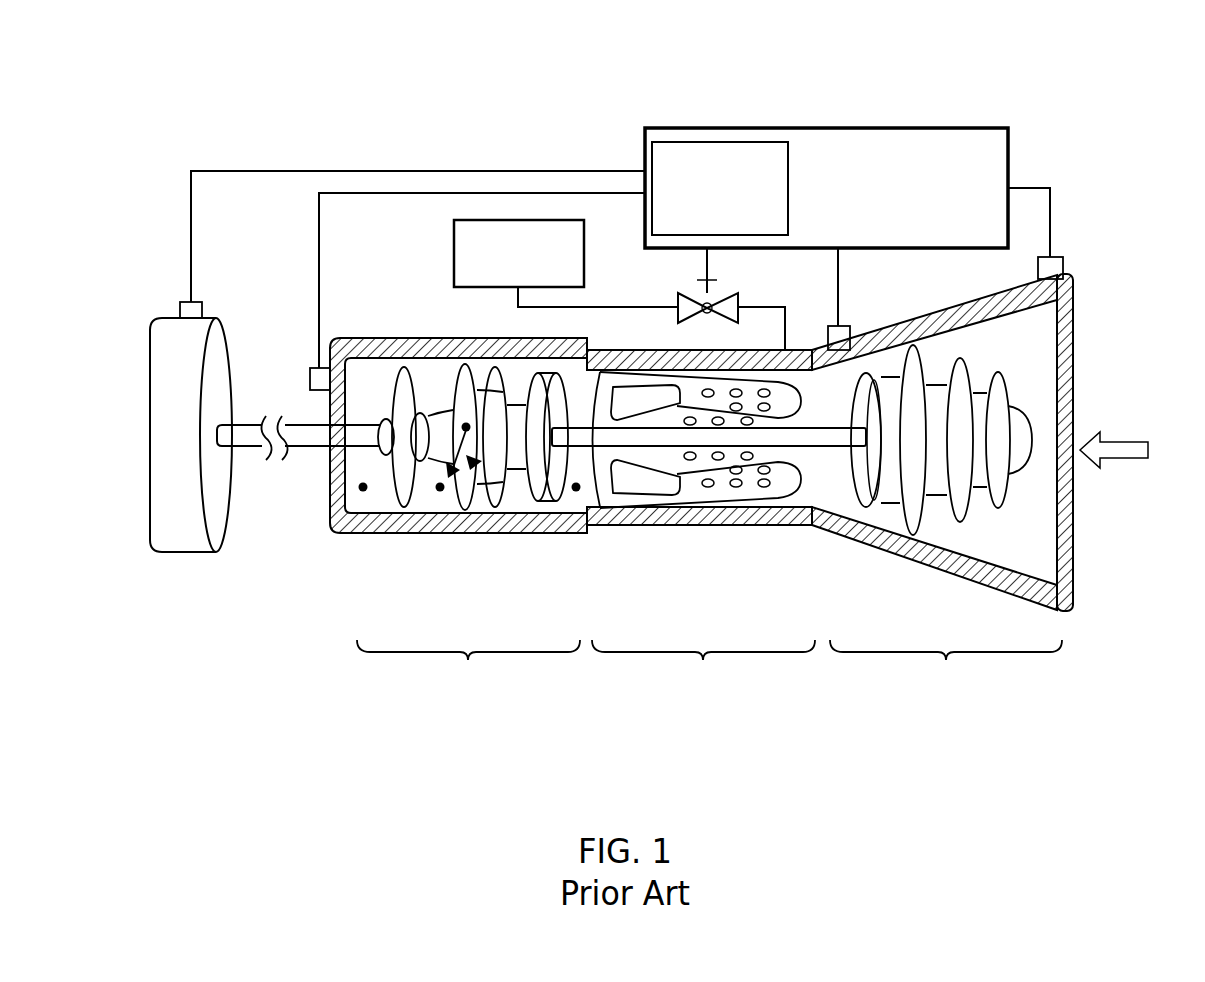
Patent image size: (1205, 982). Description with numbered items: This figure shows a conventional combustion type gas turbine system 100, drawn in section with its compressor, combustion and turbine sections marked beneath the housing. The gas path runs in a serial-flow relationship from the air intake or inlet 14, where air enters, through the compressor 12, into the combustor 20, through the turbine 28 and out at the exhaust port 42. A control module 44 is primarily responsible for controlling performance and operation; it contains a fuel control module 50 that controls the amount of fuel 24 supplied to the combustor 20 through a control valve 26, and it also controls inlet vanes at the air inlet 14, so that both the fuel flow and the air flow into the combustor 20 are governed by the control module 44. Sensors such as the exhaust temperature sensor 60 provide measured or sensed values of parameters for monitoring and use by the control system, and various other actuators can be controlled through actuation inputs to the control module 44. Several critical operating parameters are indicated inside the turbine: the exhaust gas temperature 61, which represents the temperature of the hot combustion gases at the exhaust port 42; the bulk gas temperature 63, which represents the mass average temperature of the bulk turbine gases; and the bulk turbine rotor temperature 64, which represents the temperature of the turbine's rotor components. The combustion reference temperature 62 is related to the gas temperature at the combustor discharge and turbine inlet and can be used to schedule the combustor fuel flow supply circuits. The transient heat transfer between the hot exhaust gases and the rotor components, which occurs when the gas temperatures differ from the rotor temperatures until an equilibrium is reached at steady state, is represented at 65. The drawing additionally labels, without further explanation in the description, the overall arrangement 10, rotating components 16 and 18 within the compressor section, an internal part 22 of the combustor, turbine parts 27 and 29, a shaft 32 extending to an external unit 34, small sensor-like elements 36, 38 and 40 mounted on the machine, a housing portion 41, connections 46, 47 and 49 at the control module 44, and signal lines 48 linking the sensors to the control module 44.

The gas turbine engine 10 is at (620, 368).
The compressor 12 is at (980, 453).
The air intake 14 is at (1070, 393).
The compressor rotor 16 is at (888, 400).
The compressor blades 18 is at (950, 378).
The combustor 20 is at (705, 476).
The combustor liner 22 is at (688, 488).
The fuel 24 is at (452, 238).
The control valve 26 is at (738, 302).
The turbine blade 27 is at (447, 412).
The turbine 28 is at (427, 476).
The turbine flow point 29 is at (466, 423).
The shaft 32 is at (304, 447).
The load / generator 34 is at (188, 346).
The load sensor 36 is at (192, 311).
The combustion sensor 38 is at (833, 328).
The compressor sensor 40 is at (1064, 268).
The combustion housing wall 41 is at (811, 527).
The exhaust port 42 is at (331, 413).
The control module 44 is at (874, 162).
The sensor signal input 46 is at (644, 170).
The fuel control output line 47 is at (702, 253).
The sensor signal lines 48 is at (470, 195).
The valve control line 49 is at (702, 272).
The fuel control module 50 is at (763, 150).
The exhaust temperature sensor 60 is at (312, 373).
The exhaust gas temperature 61 is at (363, 492).
The combustion reference temperature 62 is at (576, 492).
The bulk gas temperature 63 is at (440, 492).
The bulk turbine rotor temperature 64 is at (447, 480).
The transient heat transfer characteristic 65 is at (474, 464).
The gas turbine system 100 is at (216, 733).